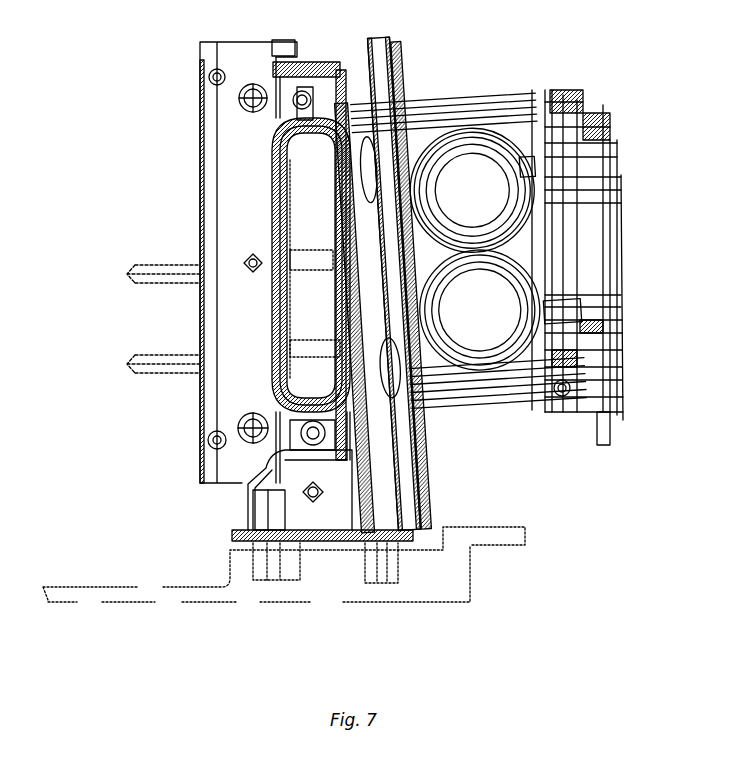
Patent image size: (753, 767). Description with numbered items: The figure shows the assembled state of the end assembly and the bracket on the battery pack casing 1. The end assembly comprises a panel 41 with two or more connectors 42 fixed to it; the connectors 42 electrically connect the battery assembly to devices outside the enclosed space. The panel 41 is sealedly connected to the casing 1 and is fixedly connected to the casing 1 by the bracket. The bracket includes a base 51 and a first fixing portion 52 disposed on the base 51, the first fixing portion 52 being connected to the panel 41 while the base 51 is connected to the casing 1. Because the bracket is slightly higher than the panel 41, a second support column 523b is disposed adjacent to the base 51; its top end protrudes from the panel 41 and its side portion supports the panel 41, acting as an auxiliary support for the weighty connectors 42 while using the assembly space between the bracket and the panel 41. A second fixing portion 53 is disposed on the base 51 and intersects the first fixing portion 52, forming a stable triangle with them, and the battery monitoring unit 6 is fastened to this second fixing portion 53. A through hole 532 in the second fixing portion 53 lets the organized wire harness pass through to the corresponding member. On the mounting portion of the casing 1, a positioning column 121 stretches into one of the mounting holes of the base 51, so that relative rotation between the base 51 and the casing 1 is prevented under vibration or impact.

The casing 1 is at (450, 577).
The battery monitoring unit 6 is at (227, 173).
The panel 41 is at (384, 80).
The connector 42 is at (580, 243).
The base 51 is at (340, 553).
The first fixing portion 52 is at (388, 418).
The second fixing portion 53 is at (280, 92).
The positioning column 121 is at (320, 533).
The through hole 532 is at (308, 237).
The second support column 523b is at (423, 500).